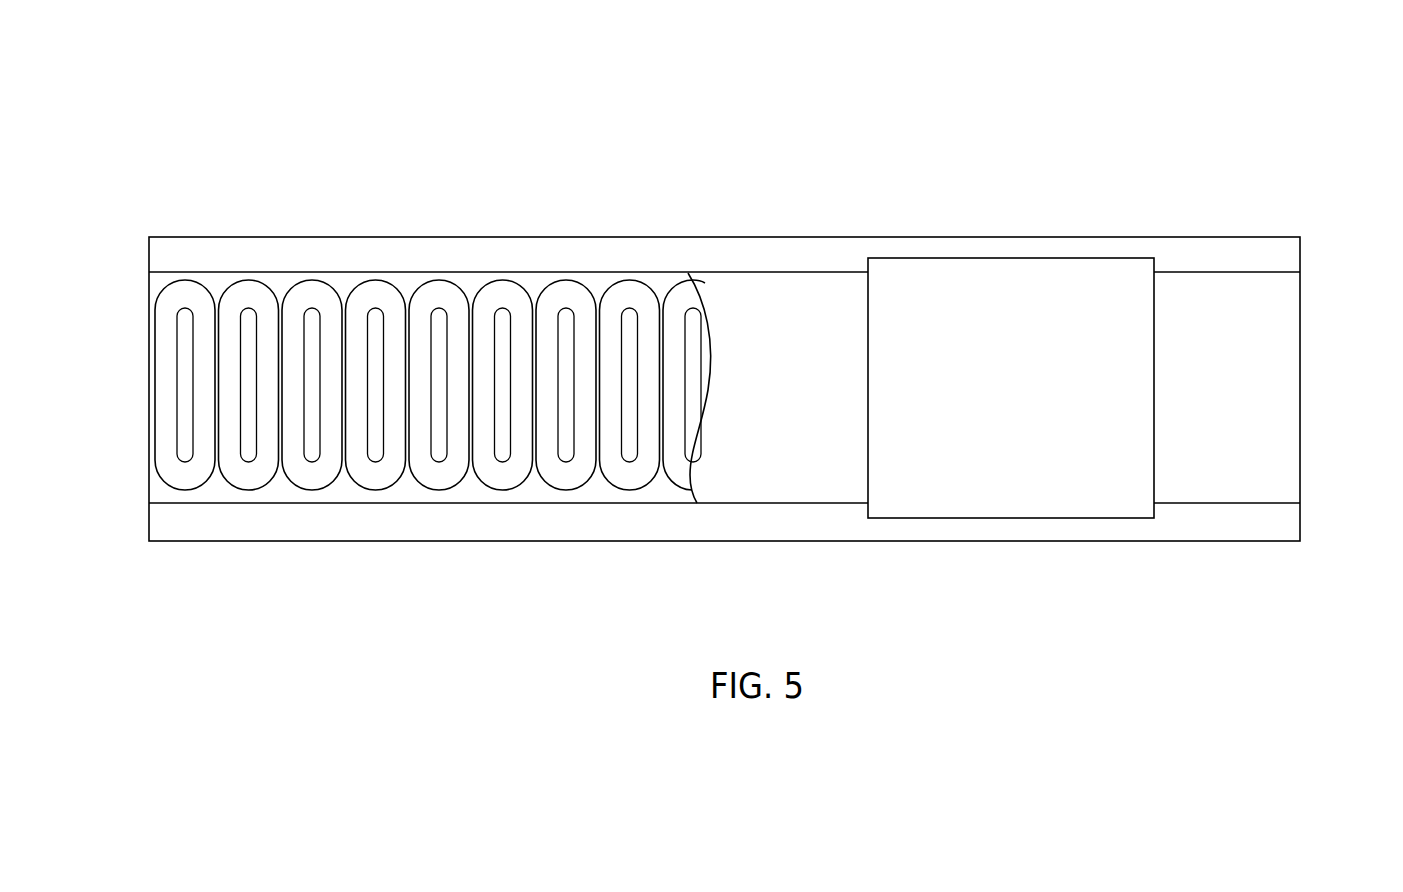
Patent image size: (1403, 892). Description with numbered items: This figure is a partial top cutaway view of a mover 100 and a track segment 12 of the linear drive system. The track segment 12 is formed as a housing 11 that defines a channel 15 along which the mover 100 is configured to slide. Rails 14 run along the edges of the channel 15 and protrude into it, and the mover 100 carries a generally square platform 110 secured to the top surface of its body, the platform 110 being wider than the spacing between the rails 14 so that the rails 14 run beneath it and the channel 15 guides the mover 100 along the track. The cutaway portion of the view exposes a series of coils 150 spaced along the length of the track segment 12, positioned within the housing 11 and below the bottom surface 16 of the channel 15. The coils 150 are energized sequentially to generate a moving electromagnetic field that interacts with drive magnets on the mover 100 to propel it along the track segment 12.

The housing 11 is at (1100, 546).
The track segment 12 is at (733, 253).
The rail 14 is at (647, 255).
The channel 15 is at (1273, 435).
The bottom surface 16 is at (798, 393).
The mover 100 is at (993, 312).
The platform 110 is at (1045, 387).
The coils 150 is at (375, 287).